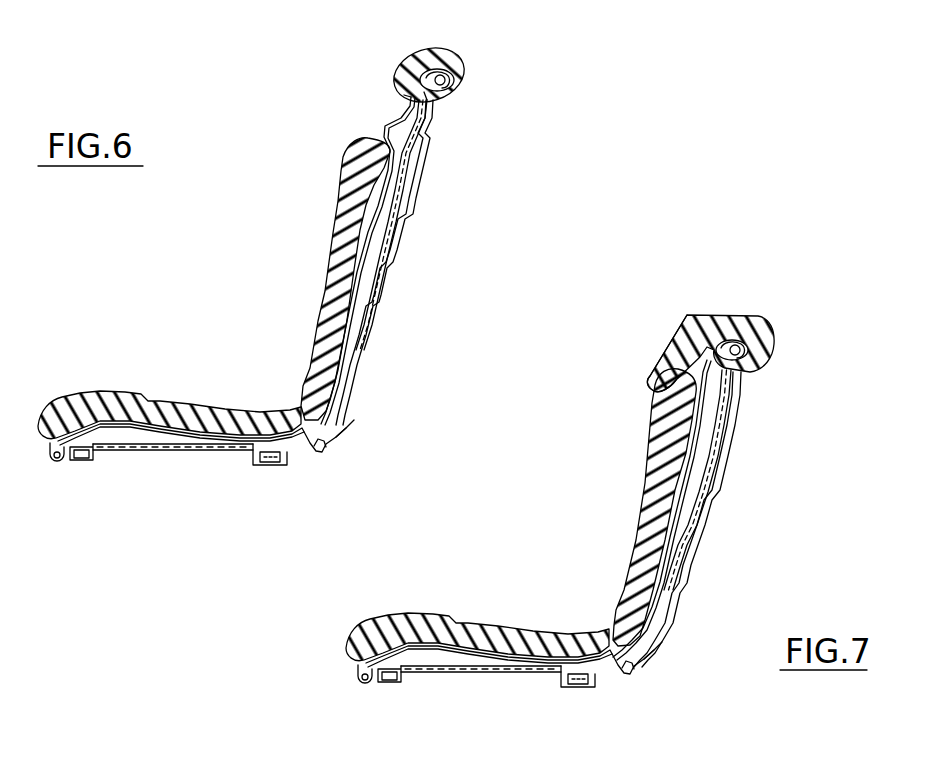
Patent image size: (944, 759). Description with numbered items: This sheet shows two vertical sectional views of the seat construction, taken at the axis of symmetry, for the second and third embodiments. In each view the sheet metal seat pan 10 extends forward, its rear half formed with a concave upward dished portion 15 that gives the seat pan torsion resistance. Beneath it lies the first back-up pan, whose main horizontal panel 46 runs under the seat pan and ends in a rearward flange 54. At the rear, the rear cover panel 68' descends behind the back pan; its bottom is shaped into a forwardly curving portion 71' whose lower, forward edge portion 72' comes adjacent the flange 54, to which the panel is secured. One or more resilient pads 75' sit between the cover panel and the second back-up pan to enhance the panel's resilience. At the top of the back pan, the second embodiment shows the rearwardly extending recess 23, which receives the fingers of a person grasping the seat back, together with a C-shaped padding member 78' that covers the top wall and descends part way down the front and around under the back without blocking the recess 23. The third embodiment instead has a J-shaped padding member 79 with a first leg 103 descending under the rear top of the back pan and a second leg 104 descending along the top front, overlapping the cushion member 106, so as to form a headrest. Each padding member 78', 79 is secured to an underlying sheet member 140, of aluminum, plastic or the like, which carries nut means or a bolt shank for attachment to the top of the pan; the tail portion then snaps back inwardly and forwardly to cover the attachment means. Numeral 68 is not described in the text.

In FIG. 6, the seat pan 10 is at (120, 427).
In FIG. 7, the seat pan 10 is at (440, 650).
In FIG. 6, the concave upward dished portion 15 is at (243, 427).
In FIG. 7, the concave upward dished portion 15 is at (548, 657).
In FIG. 6, the rearwardly extending recess 23 is at (405, 105).
In FIG. 6, the main horizontal panel 46 is at (167, 450).
In FIG. 7, the main horizontal panel 46 is at (484, 673).
In FIG. 6, the rearward flange 54 is at (305, 455).
In FIG. 7, the rearward flange 54 is at (612, 680).
In FIG. 6, the backrest shell 68 is at (407, 262).
In FIG. 7, the rear cover panel 68' is at (702, 519).
In FIG. 6, the forwardly curving portion 71' is at (363, 454).
In FIG. 7, the forwardly curving portion 71' is at (671, 677).
In FIG. 6, the lower, forward edge portion 72' is at (335, 470).
In FIG. 7, the lower, forward edge portion 72' is at (644, 693).
In FIG. 6, the resilient pad 75' is at (431, 225).
In FIG. 7, the resilient pad 75' is at (730, 480).
In FIG. 6, the padding member 78' is at (455, 73).
In FIG. 7, the padding member 79 is at (697, 315).
In FIG. 7, the first leg 103 is at (760, 348).
In FIG. 7, the second leg 104 is at (670, 343).
In FIG. 7, the cushion member 106 is at (650, 502).
In FIG. 6, the underlying sheet member 140 is at (457, 50).
In FIG. 7, the underlying sheet member 140 is at (733, 337).